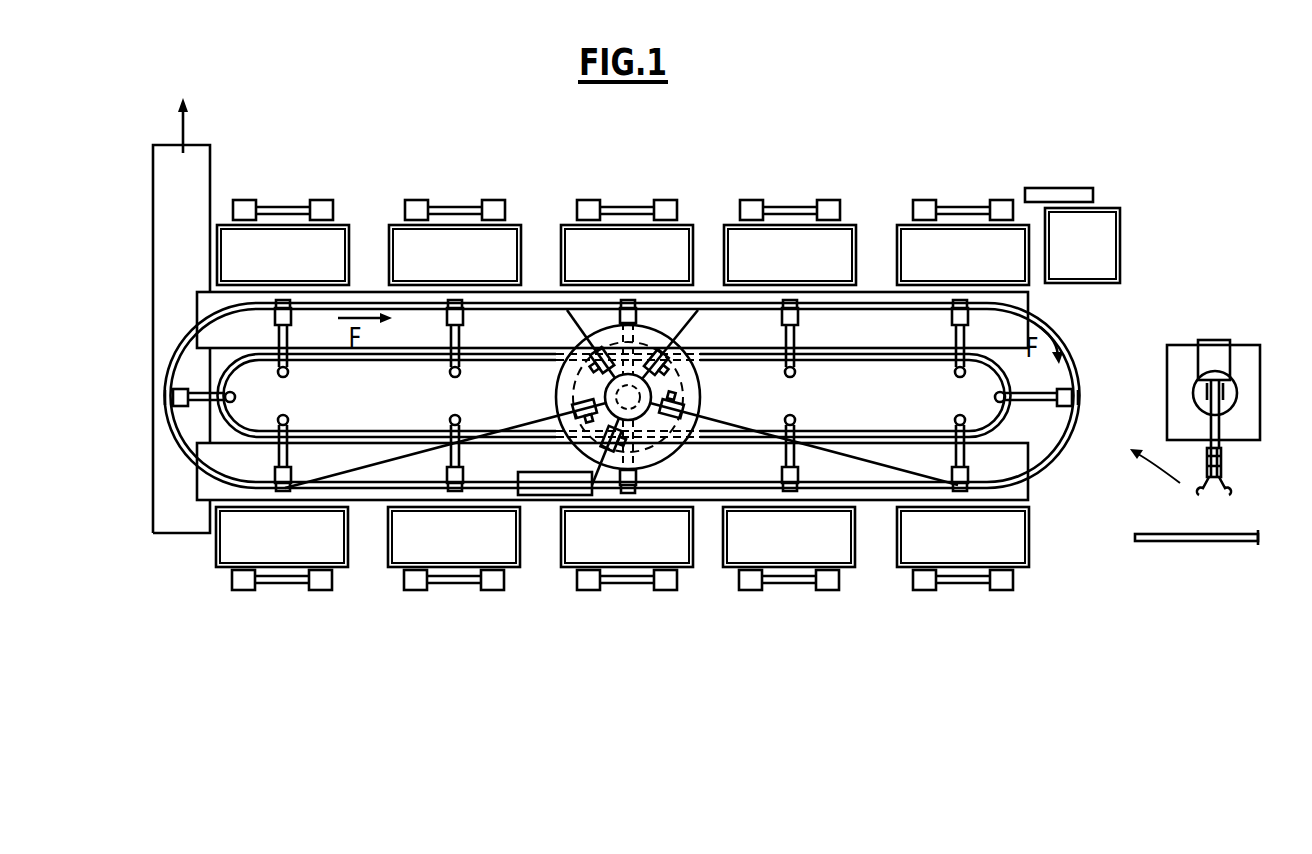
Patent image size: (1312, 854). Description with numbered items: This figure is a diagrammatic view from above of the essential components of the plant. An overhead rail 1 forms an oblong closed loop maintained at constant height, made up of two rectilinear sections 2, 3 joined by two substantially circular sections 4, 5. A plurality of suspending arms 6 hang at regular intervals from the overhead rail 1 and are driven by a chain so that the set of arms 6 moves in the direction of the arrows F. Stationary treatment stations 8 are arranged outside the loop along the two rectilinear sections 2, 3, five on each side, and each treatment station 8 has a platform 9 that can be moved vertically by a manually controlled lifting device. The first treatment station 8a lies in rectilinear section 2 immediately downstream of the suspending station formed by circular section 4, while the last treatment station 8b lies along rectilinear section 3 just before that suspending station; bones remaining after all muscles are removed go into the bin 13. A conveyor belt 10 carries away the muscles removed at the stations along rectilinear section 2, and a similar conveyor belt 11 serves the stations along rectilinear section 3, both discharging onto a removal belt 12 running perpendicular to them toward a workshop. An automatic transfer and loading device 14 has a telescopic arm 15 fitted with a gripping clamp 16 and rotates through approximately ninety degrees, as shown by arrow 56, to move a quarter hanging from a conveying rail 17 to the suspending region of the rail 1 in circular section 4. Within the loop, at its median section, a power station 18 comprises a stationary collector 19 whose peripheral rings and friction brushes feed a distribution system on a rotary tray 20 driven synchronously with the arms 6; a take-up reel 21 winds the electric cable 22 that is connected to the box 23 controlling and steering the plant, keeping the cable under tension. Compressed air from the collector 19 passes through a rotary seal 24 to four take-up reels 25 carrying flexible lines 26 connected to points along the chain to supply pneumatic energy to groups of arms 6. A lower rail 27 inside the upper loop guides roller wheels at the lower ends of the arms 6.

The overhead rail 1 is at (1073, 331).
The rectilinear section 2 is at (875, 484).
The rectilinear section 3 is at (885, 308).
The circular section 4 is at (1077, 368).
The circular section 5 is at (172, 343).
The suspending arm 6 is at (464, 320).
The treatment station 8 is at (277, 192).
The first treatment station 8a is at (966, 598).
The last treatment station 8b is at (954, 190).
The platform 9 is at (628, 542).
The conveyor belt 10 is at (1013, 490).
The conveyor belt 11 is at (1015, 296).
The removal belt 12 is at (177, 193).
The bin 13 is at (1092, 245).
The automatic transfer and loading device 14 is at (1217, 328).
The telescopic arm 15 is at (1215, 430).
The gripping clamp 16 is at (1228, 491).
The conveying rail 17 is at (1205, 542).
The power station 18 is at (713, 410).
The stationary collector 19 is at (697, 380).
The rotary tray 20 is at (576, 398).
The take-up reel 21 is at (673, 437).
The electric cable 22 is at (593, 472).
The box 23 is at (525, 471).
The rotary seal 24 is at (603, 388).
The take-up reel 25 is at (663, 352).
The flexible line 26 is at (573, 323).
The lower rail 27 is at (372, 433).
The arrow 56 is at (1155, 477).